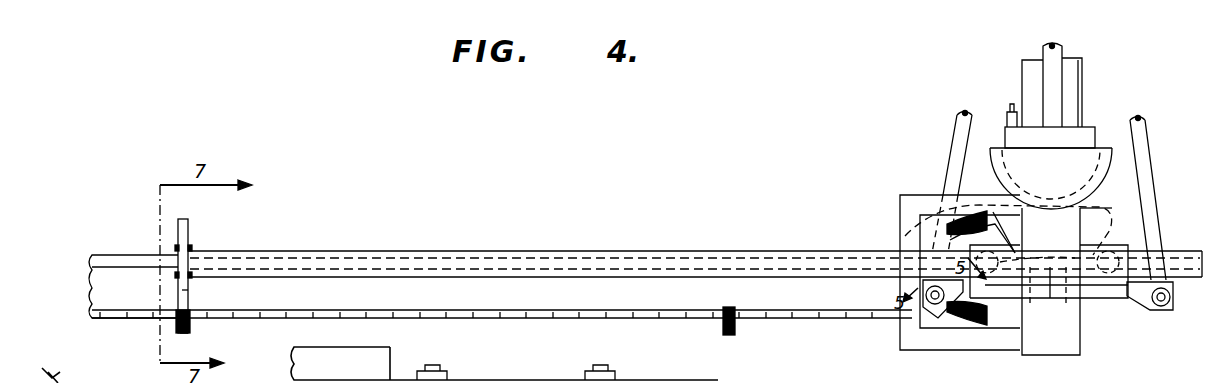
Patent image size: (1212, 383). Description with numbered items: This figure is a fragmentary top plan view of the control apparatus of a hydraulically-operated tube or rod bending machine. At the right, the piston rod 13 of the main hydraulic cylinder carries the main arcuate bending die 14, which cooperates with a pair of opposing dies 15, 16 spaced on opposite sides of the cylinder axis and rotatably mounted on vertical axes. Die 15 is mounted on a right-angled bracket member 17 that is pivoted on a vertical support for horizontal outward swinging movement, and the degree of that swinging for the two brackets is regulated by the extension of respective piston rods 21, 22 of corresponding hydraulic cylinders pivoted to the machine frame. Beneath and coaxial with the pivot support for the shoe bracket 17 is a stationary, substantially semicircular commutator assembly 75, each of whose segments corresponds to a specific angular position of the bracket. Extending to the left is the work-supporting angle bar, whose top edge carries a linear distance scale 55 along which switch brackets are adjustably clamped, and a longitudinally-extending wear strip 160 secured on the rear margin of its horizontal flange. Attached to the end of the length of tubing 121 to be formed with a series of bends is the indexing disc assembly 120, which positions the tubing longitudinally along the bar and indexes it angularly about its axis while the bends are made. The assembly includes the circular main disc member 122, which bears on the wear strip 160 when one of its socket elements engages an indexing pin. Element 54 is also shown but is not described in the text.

The piston rod 13 is at (1052, 72).
The main arcuate bending die 14 is at (1076, 172).
The opposing die 15 is at (1037, 305).
The opposing die 16 is at (1068, 300).
The bracket member 17 is at (1005, 297).
The piston rod 21 is at (957, 155).
The piston rod 22 is at (1148, 194).
The set screw 54 is at (186, 334).
The linear distance scale 55 is at (512, 320).
The commutator assembly 75 is at (966, 320).
The indexing disc assembly 120 is at (194, 234).
The length of tubing 121 is at (336, 251).
The circular main disc member 122 is at (182, 290).
The wear strip 160 is at (108, 262).